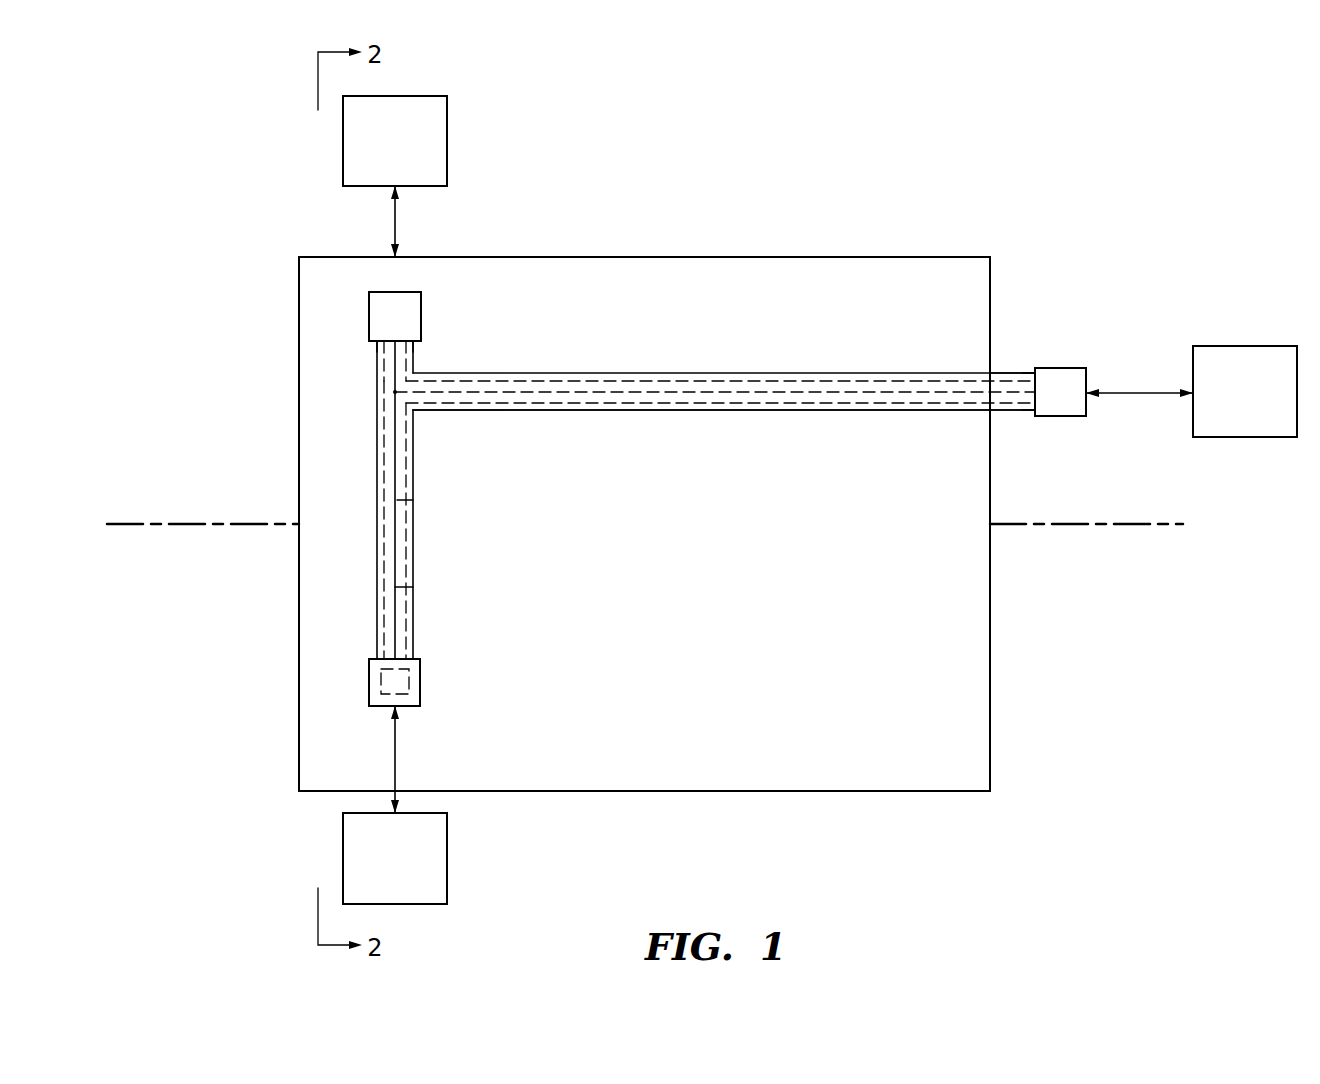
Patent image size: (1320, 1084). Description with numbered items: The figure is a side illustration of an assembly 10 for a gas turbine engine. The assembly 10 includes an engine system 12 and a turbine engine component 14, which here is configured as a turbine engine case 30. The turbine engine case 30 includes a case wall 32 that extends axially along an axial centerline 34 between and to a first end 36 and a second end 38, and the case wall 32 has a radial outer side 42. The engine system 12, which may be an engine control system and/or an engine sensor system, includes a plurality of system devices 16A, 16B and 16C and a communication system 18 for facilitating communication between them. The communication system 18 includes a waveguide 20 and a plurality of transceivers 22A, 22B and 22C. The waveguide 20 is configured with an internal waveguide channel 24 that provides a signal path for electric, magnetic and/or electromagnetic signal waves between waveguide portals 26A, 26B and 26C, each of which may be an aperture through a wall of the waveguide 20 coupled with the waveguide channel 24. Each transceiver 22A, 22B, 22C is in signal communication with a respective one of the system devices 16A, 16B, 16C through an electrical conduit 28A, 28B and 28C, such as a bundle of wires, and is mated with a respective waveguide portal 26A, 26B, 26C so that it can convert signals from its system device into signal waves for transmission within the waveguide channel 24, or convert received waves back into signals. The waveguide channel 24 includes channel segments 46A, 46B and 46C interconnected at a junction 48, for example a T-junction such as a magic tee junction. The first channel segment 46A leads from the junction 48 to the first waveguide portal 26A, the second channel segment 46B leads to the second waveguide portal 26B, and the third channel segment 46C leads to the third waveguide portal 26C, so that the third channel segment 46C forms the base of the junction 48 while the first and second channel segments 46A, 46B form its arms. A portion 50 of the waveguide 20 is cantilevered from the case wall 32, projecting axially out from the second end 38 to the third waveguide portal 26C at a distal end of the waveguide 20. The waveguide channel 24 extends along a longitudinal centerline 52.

The assembly 10 is at (1110, 160).
The engine system 12 is at (320, 352).
The turbine engine component 14 is at (644, 474).
The turbine engine case 30 is at (709, 257).
The first system device 16A is at (420, 157).
The second system device 16B is at (420, 874).
The third system device 16C is at (1270, 407).
The communication system 18 is at (646, 373).
The waveguide 20 is at (647, 410).
The first transceiver 22A is at (421, 312).
The second transceiver 22B is at (421, 682).
The third transceiver 22C is at (1063, 368).
The waveguide channel 24 is at (737, 381).
The first waveguide portal 26A is at (385, 357).
The second waveguide portal 26B is at (410, 672).
The third waveguide portal 26C is at (1035, 400).
The first electrical conduit 28A is at (395, 218).
The second electrical conduit 28B is at (395, 748).
The third electrical conduit 28C is at (1138, 393).
The case wall 32 is at (847, 257).
The axial centerline 34 is at (1165, 527).
The first end 36 is at (299, 602).
The second end 38 is at (990, 630).
The radial outer side 42 is at (933, 280).
The first channel segment 46A is at (400, 358).
The second channel segment 46B is at (400, 500).
The third channel segment 46C is at (468, 397).
The junction 48 is at (393, 397).
The waveguide portion 50 is at (1010, 368).
The longitudinal centerline 52 is at (577, 392).